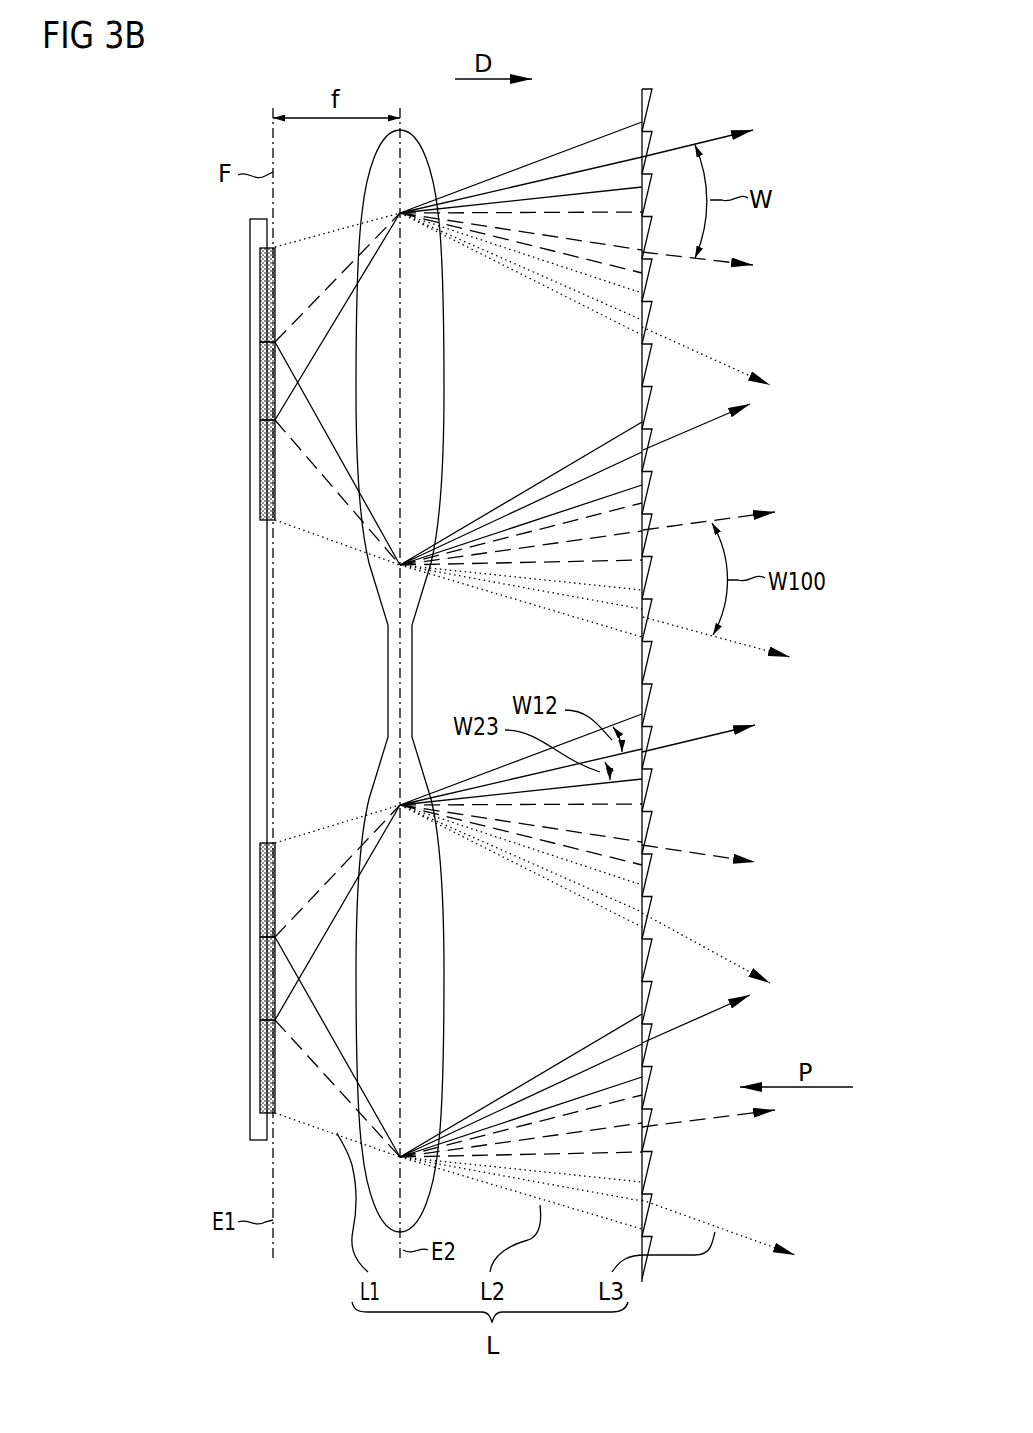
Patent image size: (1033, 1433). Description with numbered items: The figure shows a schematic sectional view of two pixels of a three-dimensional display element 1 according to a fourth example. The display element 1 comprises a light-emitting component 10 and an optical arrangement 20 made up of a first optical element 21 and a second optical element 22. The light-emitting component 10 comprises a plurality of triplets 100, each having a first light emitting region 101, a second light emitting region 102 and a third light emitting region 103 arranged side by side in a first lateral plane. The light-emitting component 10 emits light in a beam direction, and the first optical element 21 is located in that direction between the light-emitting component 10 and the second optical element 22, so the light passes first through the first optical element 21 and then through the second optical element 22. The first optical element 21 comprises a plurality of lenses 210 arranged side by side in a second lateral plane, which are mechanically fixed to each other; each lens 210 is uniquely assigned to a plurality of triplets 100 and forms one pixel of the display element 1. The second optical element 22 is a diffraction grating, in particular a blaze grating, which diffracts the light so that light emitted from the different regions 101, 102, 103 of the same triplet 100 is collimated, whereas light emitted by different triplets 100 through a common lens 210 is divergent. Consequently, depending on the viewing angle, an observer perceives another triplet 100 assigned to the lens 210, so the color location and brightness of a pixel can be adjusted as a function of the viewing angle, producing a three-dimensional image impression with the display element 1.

The 3D display element 1 is at (562, 110).
The light-emitting component 10 is at (250, 722).
The optical arrangement 20 is at (570, 362).
The first optical element 21 is at (642, 371).
The second optical element 22 is at (430, 387).
The triplet 100 is at (162, 833).
The first light emitting region 101 is at (260, 855).
The second light emitting region 102 is at (260, 893).
The third light emitting region 103 is at (260, 930).
The lens 210 is at (430, 995).